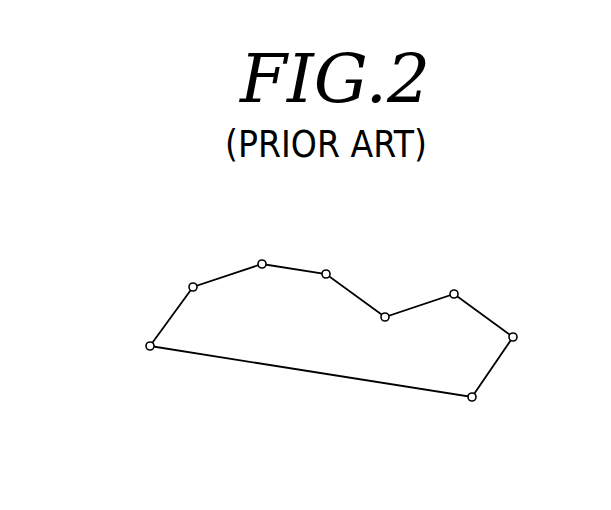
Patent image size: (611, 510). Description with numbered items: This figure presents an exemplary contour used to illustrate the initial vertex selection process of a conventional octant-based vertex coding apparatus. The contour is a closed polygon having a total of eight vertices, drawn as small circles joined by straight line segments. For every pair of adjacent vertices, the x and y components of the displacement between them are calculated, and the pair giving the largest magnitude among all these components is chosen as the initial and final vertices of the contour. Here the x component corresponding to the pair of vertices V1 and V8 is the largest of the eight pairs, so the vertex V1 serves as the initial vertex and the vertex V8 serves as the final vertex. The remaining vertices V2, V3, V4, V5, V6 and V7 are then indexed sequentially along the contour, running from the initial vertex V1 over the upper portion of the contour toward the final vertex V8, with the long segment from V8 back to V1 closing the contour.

The initial vertex V1 is at (125, 335).
The vertex V2 is at (170, 265).
The vertex V3 is at (246, 238).
The vertex V4 is at (326, 252).
The vertex V5 is at (385, 294).
The vertex V6 is at (451, 271).
The vertex V7 is at (536, 331).
The final vertex V8 is at (496, 418).